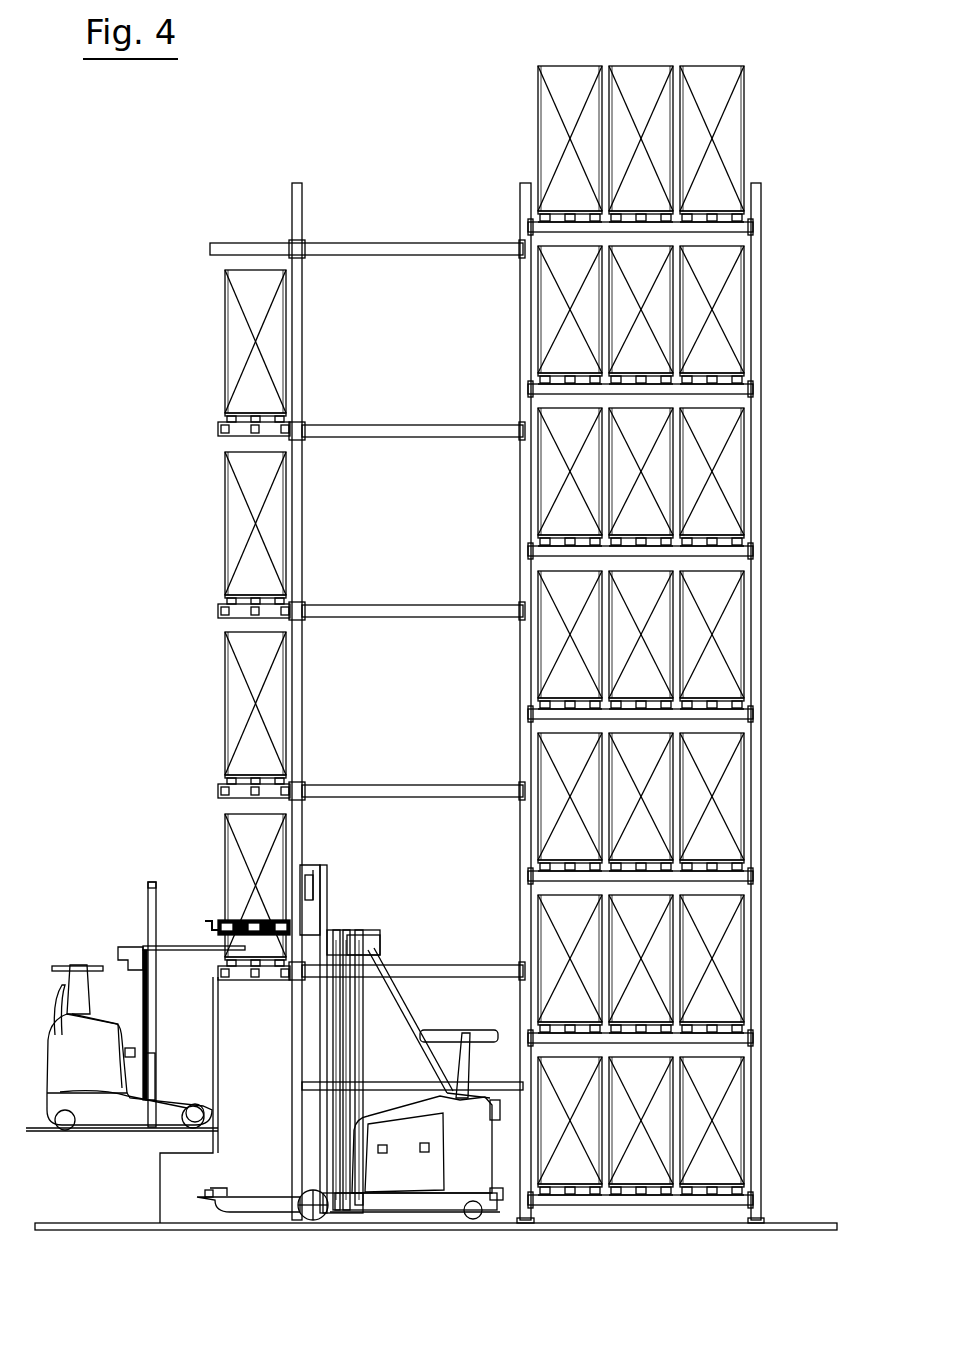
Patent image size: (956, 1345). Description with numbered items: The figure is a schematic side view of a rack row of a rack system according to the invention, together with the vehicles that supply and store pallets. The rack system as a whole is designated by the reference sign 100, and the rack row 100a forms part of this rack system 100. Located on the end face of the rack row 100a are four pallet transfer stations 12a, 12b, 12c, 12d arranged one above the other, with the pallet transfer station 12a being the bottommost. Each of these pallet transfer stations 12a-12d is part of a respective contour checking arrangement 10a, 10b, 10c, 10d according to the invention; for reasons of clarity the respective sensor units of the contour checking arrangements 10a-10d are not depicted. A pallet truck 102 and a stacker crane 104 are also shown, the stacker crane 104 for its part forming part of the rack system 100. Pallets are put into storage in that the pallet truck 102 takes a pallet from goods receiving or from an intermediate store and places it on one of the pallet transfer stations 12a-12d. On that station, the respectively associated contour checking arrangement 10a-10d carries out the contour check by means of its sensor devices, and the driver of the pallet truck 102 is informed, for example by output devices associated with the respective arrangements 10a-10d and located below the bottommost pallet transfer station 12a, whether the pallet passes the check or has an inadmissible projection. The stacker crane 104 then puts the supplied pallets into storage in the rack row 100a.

The rack system 100 is at (409, 206).
The rack row 100a is at (757, 447).
The contour checking arrangement 10a is at (272, 891).
The contour checking arrangement 10b is at (277, 757).
The contour checking arrangement 10c is at (249, 581).
The contour checking arrangement 10d is at (256, 395).
The pallet transfer station 12a is at (212, 855).
The pallet transfer station 12b is at (213, 718).
The pallet transfer station 12c is at (212, 563).
The pallet transfer station 12d is at (208, 369).
The pallet truck 102 is at (73, 1050).
The stacker crane 104 is at (383, 1180).